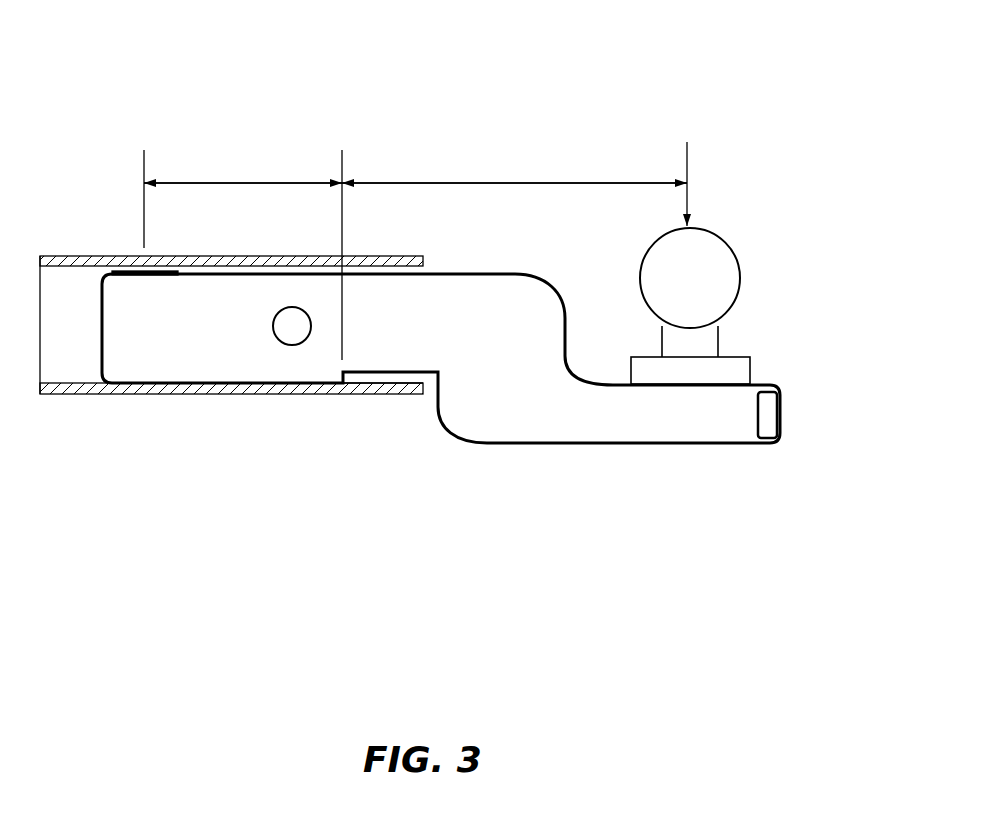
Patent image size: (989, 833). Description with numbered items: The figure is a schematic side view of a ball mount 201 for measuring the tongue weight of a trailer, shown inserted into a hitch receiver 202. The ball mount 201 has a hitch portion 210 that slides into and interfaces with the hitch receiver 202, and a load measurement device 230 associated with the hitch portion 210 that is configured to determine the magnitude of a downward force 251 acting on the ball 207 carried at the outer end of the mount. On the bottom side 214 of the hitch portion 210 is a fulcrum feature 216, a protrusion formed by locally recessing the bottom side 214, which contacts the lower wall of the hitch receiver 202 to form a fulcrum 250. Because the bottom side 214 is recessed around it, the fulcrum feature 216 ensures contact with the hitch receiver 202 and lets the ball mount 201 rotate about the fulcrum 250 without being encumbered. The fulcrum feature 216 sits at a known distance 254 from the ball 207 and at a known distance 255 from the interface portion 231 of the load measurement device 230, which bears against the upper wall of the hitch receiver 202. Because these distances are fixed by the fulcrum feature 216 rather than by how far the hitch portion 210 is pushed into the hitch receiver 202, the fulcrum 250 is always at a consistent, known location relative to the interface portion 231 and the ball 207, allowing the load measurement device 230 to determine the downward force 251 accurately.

The ball mount 201 is at (474, 250).
The hitch receiver 202 is at (105, 256).
The ball 207 is at (741, 282).
The hitch portion 210 is at (205, 360).
The bottom side 214 is at (413, 390).
The fulcrum feature 216 is at (362, 384).
The load measurement device 230 is at (195, 239).
The interface portion 231 is at (165, 271).
The fulcrum 250 is at (345, 386).
The downward force 251 is at (688, 166).
The known distance 254 is at (494, 183).
The known distance 255 is at (256, 183).